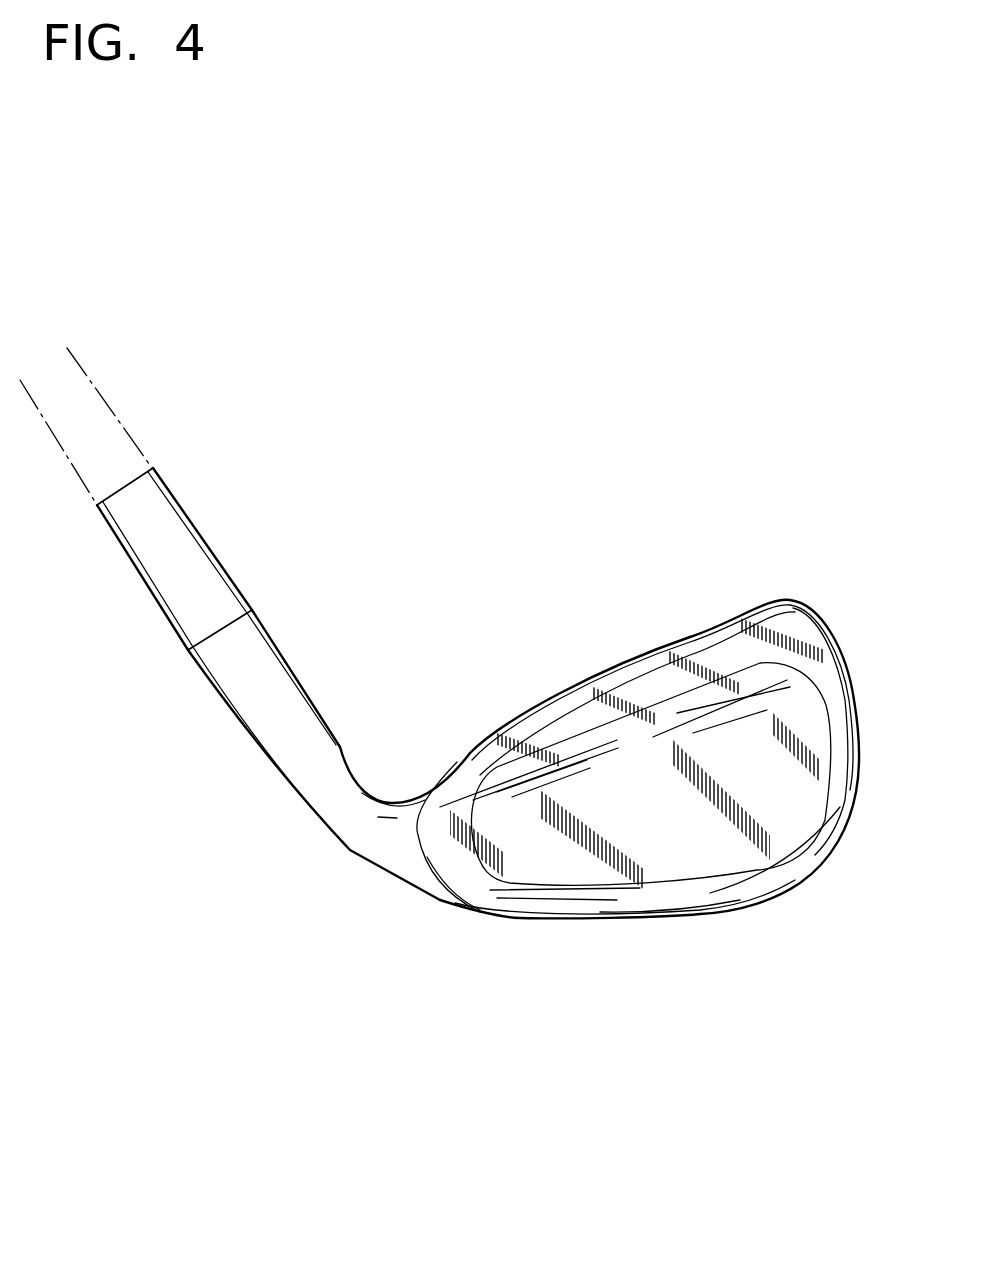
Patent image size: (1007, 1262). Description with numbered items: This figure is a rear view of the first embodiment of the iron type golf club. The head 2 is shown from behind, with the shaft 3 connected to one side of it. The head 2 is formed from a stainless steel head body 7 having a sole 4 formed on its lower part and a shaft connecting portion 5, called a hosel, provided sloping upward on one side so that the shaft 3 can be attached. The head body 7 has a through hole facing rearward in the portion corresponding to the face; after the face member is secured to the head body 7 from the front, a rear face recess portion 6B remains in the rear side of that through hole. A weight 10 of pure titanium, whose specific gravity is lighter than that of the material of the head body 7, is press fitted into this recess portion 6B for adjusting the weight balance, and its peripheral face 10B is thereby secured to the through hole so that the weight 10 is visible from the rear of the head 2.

The head 2 is at (758, 407).
The shaft 3 is at (118, 428).
The sole 4 is at (685, 920).
The shaft connecting portion 5 is at (292, 665).
The rear face recess portion 6B is at (563, 737).
The head body 7 is at (681, 635).
The weight 10 is at (648, 822).
The peripheral face 10B is at (550, 885).